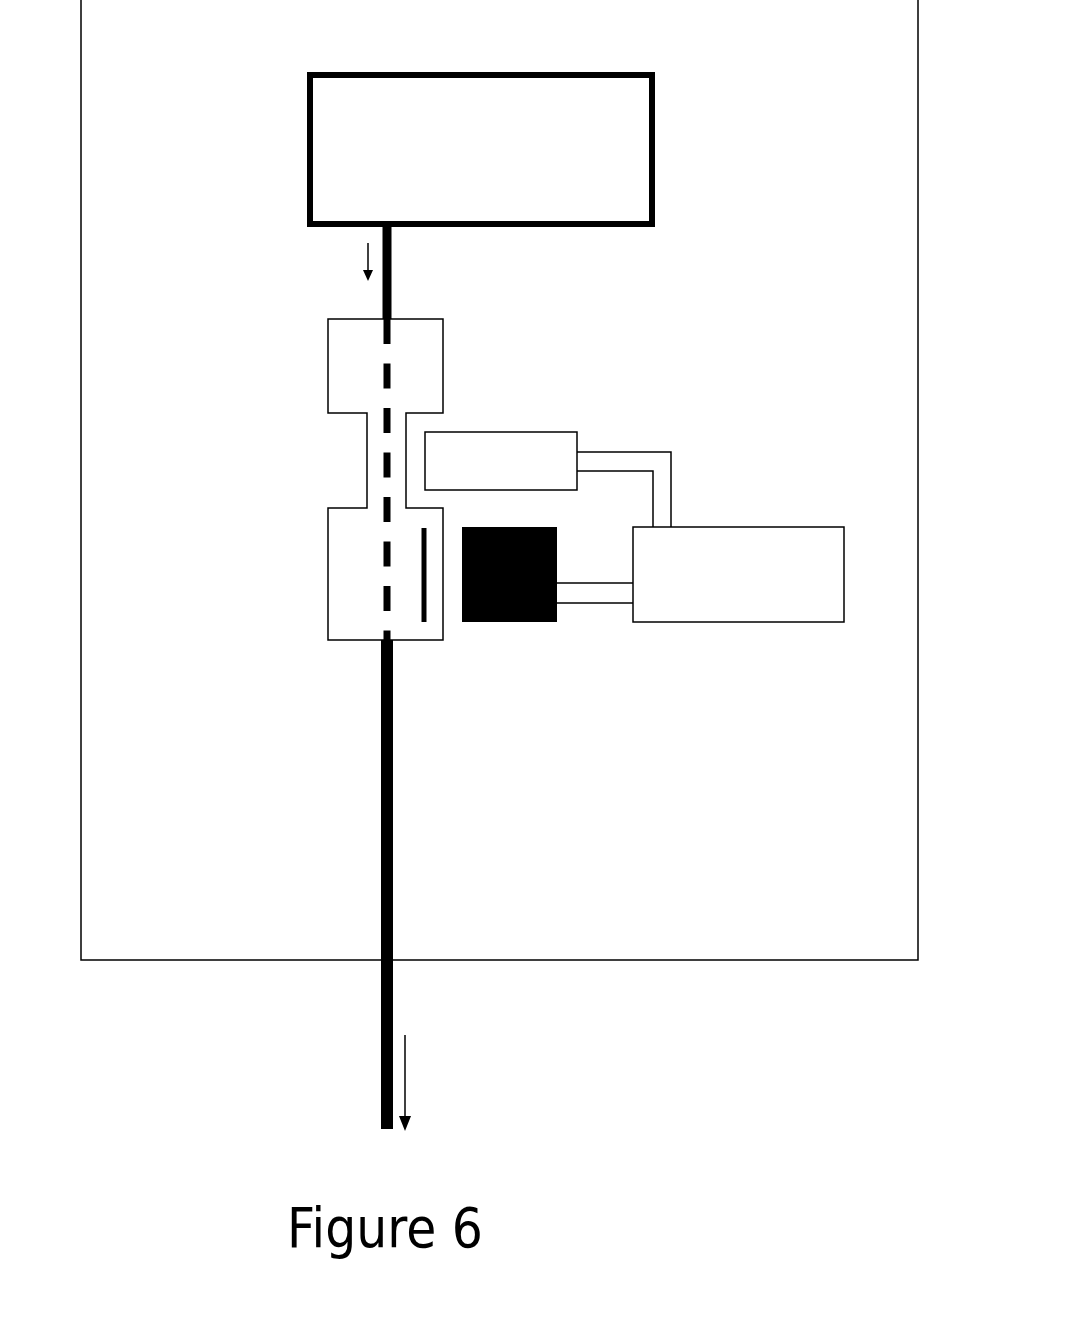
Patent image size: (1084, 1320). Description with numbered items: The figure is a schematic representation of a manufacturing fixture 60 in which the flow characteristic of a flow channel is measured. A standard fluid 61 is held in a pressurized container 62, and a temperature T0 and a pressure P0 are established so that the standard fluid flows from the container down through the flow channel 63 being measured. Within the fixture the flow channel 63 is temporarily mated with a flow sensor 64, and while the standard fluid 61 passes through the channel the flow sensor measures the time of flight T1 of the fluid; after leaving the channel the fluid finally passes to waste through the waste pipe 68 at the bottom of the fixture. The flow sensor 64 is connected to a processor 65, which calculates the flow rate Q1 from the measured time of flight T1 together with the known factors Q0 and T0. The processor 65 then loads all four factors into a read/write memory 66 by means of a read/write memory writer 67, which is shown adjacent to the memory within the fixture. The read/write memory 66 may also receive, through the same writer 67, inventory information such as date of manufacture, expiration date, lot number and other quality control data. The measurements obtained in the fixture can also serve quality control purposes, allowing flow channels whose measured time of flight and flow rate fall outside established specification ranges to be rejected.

The manufacturing fixture 60 is at (812, 55).
The standard fluid 61 is at (472, 188).
The pressurized container 62 is at (655, 208).
The flow channel 63 is at (389, 376).
The flow sensor 64 is at (477, 438).
The processor 65 is at (671, 622).
The read/write memory 66 is at (422, 593).
The read/write memory writer 67 is at (482, 622).
The waste pipe 68 is at (393, 828).